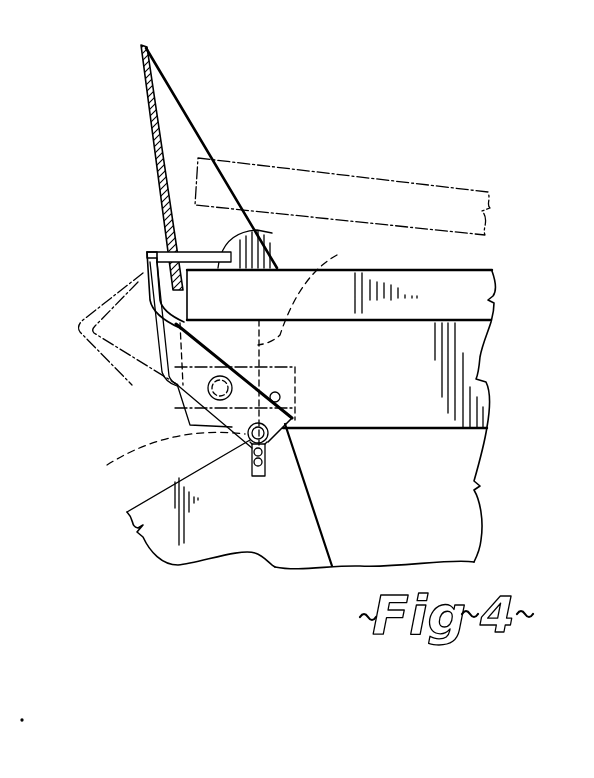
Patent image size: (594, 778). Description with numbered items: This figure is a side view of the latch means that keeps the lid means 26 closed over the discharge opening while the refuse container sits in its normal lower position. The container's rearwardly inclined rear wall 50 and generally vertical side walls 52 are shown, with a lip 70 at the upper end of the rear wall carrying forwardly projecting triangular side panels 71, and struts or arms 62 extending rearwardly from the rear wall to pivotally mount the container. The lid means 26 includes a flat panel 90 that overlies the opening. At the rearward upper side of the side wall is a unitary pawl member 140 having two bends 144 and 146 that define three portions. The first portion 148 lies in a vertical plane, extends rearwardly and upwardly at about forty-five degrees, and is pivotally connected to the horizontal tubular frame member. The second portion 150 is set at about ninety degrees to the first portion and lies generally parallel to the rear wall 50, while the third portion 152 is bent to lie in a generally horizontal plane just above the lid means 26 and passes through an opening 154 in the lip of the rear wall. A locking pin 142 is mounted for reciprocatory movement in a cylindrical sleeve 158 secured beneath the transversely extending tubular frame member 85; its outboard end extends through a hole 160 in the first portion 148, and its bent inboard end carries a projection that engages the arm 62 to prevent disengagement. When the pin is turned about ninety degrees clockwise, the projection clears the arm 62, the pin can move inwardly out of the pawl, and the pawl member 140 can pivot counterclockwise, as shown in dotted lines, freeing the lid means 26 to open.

The lid means 26 is at (491, 264).
The rear wall 50 is at (318, 532).
The side walls 52 is at (437, 476).
The arms 62 is at (157, 537).
The lip 70 is at (153, 124).
The triangular side panels 71 is at (175, 126).
The tubular frame member 85 is at (311, 343).
The panel 90 is at (392, 268).
The pawl member 140 is at (166, 391).
The locking pin 142 is at (240, 469).
The bend 144 is at (153, 332).
The bend 146 is at (145, 252).
The first portion 148 is at (160, 366).
The second portion 150 is at (143, 265).
The third portion 152 is at (267, 248).
The opening 154 is at (167, 218).
The cylindrical sleeve 158 is at (161, 465).
The hole 160 is at (268, 441).